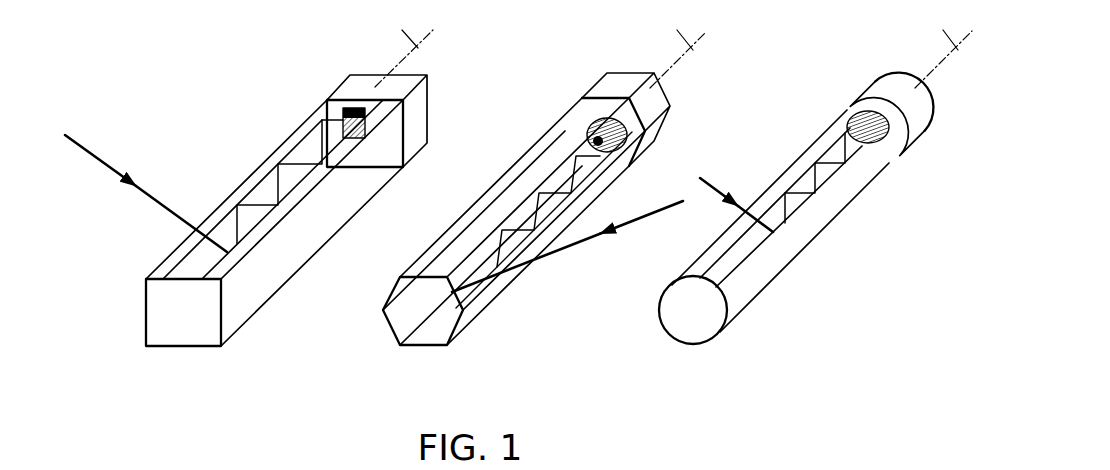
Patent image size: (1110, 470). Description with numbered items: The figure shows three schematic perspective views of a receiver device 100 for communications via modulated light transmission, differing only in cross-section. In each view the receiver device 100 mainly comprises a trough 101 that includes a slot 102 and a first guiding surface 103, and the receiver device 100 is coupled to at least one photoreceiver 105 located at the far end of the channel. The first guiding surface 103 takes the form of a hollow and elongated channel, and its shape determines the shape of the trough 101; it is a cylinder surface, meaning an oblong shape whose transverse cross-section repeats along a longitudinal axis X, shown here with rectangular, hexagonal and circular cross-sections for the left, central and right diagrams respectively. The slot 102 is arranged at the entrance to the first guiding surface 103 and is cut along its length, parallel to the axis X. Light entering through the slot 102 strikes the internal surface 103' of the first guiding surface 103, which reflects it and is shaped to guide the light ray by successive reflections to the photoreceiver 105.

The receiver device 100 is at (303, 107).
The trough 101 is at (257, 157).
The slot 102 is at (182, 280).
The first guiding surface 103 is at (521, 333).
The internal surface 103' is at (500, 326).
The photoreceiver 105 is at (348, 112).